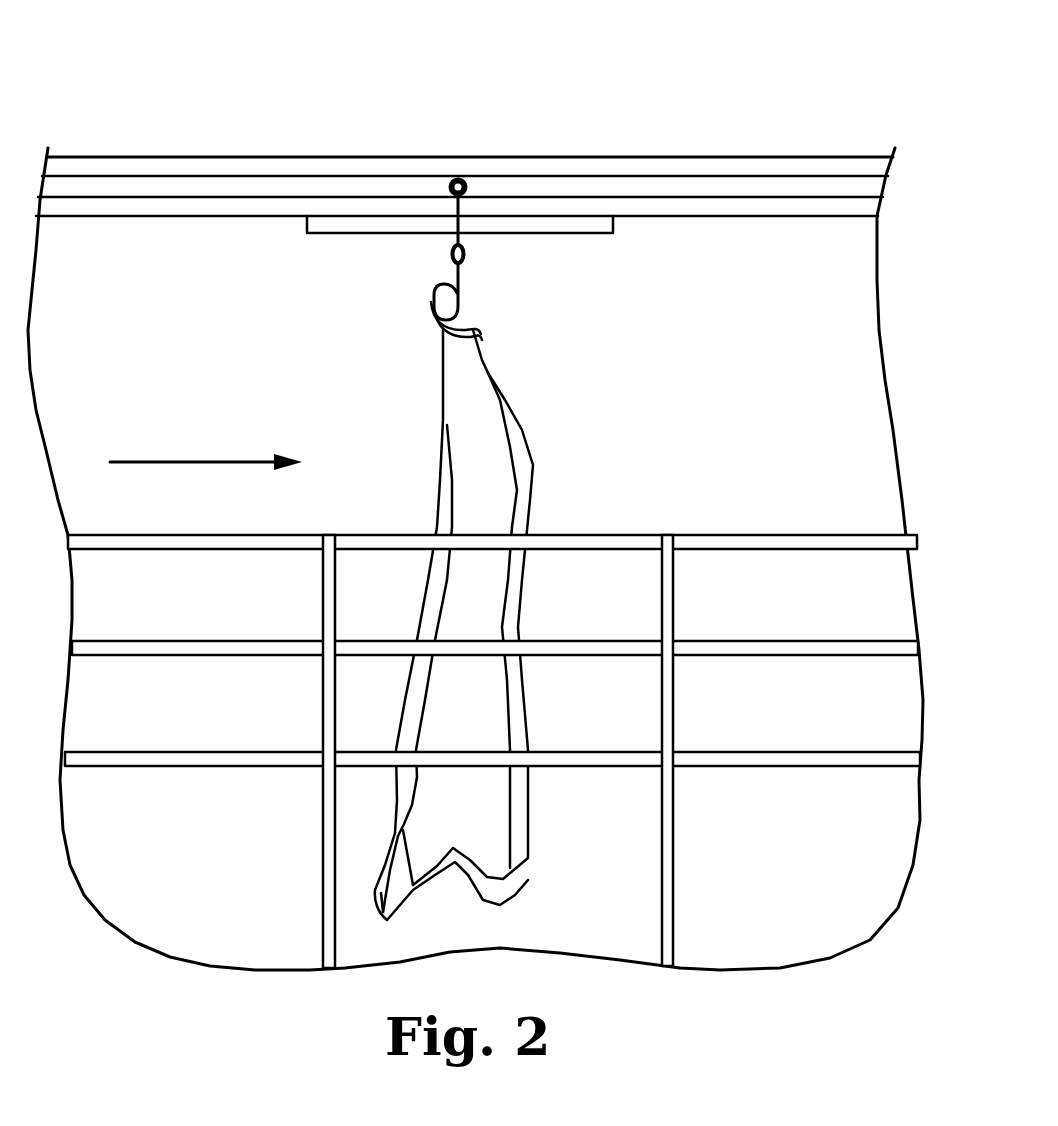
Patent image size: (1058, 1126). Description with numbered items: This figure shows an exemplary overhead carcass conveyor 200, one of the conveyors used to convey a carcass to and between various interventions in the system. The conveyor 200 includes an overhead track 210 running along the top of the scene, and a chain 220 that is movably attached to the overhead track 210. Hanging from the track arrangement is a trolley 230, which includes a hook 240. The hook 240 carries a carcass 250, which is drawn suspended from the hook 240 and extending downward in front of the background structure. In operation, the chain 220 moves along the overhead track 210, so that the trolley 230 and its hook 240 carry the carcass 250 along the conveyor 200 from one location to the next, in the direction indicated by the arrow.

The overhead carcass conveyor 200 is at (725, 116).
The overhead track 210 is at (237, 188).
The chain 220 is at (601, 237).
The trolley 230 is at (451, 253).
The hook 240 is at (460, 292).
The carcass 250 is at (493, 480).